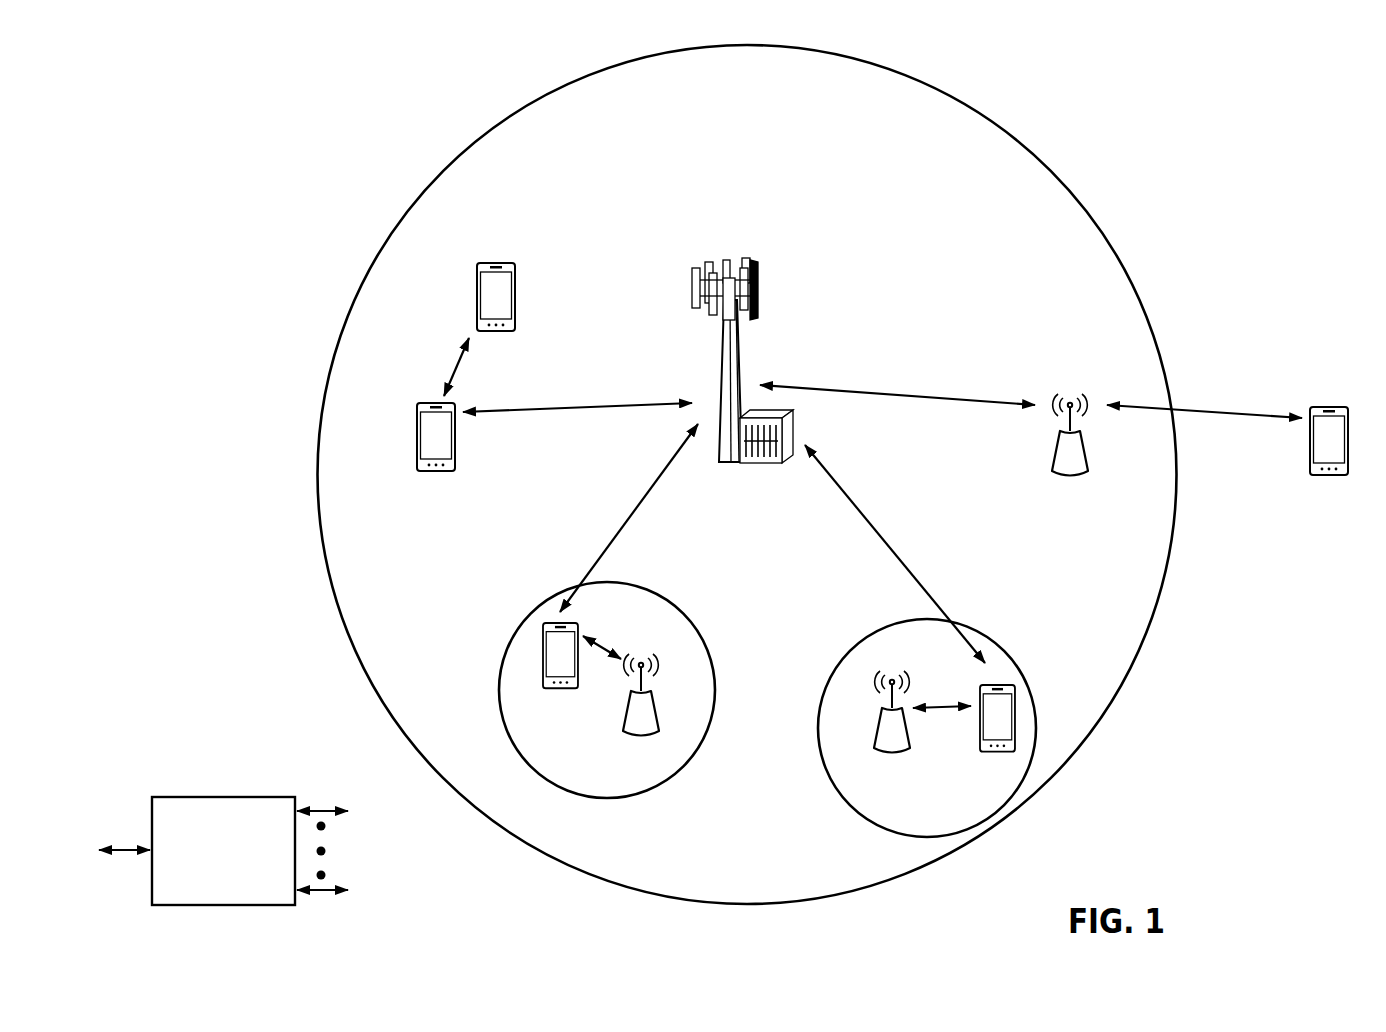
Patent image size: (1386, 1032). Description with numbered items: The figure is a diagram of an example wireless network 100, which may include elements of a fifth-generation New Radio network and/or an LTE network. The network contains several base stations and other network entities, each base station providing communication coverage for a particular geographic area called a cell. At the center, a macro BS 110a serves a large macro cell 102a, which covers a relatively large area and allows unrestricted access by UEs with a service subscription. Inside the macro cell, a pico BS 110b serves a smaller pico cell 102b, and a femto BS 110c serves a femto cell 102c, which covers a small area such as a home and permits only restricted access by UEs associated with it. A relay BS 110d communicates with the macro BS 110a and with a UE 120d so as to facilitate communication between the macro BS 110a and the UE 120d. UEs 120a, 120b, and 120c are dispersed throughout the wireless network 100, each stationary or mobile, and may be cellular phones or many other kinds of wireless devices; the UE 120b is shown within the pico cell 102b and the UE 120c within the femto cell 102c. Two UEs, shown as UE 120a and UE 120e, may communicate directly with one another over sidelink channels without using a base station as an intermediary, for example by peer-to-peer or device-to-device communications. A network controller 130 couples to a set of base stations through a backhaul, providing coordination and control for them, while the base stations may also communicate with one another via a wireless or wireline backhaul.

The wireless network 100 is at (206, 42).
The macro cell 102a is at (1035, 153).
The pico cell 102b is at (700, 632).
The femto cell 102c is at (862, 641).
The macro BS 110a is at (728, 245).
The pico BS 110b is at (660, 725).
The femto BS 110c is at (875, 745).
The relay BS 110d is at (1070, 397).
The UE 120a is at (417, 440).
The UE 120b is at (553, 688).
The UE 120c is at (983, 752).
The UE 120d is at (1336, 405).
The UE 120e is at (477, 288).
The network controller 130 is at (222, 797).